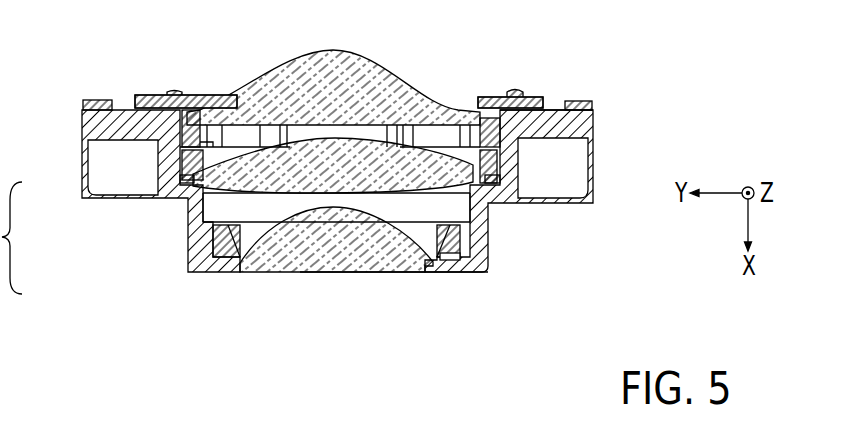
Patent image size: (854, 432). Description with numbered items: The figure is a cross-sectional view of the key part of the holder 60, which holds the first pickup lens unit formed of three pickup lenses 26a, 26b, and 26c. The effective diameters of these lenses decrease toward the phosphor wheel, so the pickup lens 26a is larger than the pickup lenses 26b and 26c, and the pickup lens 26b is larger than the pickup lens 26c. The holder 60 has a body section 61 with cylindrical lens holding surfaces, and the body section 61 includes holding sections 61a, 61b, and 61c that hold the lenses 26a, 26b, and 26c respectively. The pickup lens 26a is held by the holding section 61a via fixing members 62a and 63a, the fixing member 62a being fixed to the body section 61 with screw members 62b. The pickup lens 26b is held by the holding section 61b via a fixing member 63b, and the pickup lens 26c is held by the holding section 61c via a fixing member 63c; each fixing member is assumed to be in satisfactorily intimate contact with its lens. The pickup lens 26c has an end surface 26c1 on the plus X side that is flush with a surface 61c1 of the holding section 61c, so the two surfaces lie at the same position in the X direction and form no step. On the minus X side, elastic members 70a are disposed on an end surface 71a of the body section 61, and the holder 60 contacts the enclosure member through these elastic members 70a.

The holder 60 is at (357, 167).
The body section 61 is at (594, 120).
The holding section 61a is at (488, 128).
The holding section 61b is at (451, 124).
The holding section 61c is at (457, 248).
The surface 61c1 is at (460, 274).
The fixing member 62a is at (148, 95).
The screw member 62b is at (173, 91).
The fixing member 63a is at (190, 135).
The fixing member 63b is at (497, 165).
The fixing member 63c is at (470, 228).
The elastic member 70a is at (95, 101).
The −X-side end surface 71a is at (557, 110).
The pickup lens 26a is at (298, 126).
The pickup lens 26b is at (248, 190).
The pickup lens 26c is at (252, 279).
The +X-side end surface 26c1 is at (371, 274).